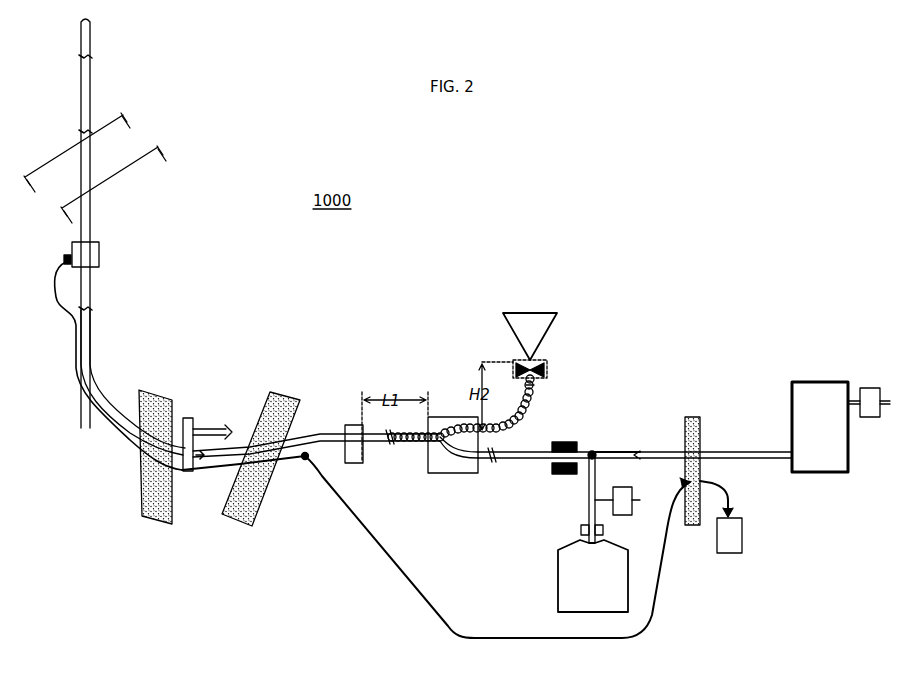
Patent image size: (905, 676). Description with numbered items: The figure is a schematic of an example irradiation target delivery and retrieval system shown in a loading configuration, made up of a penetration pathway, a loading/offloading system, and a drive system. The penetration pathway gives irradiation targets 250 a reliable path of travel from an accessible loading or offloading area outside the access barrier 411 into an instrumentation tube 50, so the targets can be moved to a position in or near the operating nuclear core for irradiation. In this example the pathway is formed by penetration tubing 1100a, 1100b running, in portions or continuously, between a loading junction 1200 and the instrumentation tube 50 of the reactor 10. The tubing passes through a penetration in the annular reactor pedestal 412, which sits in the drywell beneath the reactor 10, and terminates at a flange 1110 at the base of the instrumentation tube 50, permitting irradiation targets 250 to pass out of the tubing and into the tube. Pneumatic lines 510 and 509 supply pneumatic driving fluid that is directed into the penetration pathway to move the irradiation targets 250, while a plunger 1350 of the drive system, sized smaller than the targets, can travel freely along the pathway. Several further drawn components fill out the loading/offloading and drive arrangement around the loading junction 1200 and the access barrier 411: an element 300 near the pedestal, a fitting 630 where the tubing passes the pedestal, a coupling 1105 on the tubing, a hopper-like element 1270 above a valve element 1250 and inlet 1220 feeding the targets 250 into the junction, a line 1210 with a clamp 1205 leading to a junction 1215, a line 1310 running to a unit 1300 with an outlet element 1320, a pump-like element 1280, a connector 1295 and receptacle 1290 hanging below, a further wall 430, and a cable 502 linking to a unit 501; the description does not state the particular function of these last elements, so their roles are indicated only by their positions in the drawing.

The reactor 10 is at (140, 160).
The instrumentation tube 50 is at (80, 108).
The drilling fluid supply 300 is at (218, 426).
The access barrier 411 is at (236, 514).
The reactor pedestal 412 is at (140, 497).
The partition wall 430 is at (690, 415).
The control unit 501 is at (745, 538).
The signal cable 502 is at (650, 600).
The pneumatic line 509 is at (74, 368).
The pneumatic line 510 is at (64, 256).
The bulkhead fitting 630 is at (189, 416).
The penetration tubing 1100a is at (330, 432).
The penetration tubing 1100b is at (93, 346).
The hose coupling 1105 is at (356, 465).
The flange 1110 is at (100, 250).
The loading junction 1200 is at (468, 475).
The irradiation target 250 is at (522, 414).
The hopper 1270 is at (503, 327).
The valve 1250 is at (548, 363).
The tube inlet 1220 is at (535, 388).
The sample line 1210 is at (520, 462).
The clamp 1205 is at (565, 477).
The junction 1215 is at (592, 450).
The plunger 1350 is at (610, 452).
The feed line 1310 is at (737, 450).
The analyzer 1300 is at (820, 380).
The outlet unit 1320 is at (872, 386).
The pump 1280 is at (621, 485).
The bag connector 1295 is at (579, 528).
The sample bag 1290 is at (556, 588).